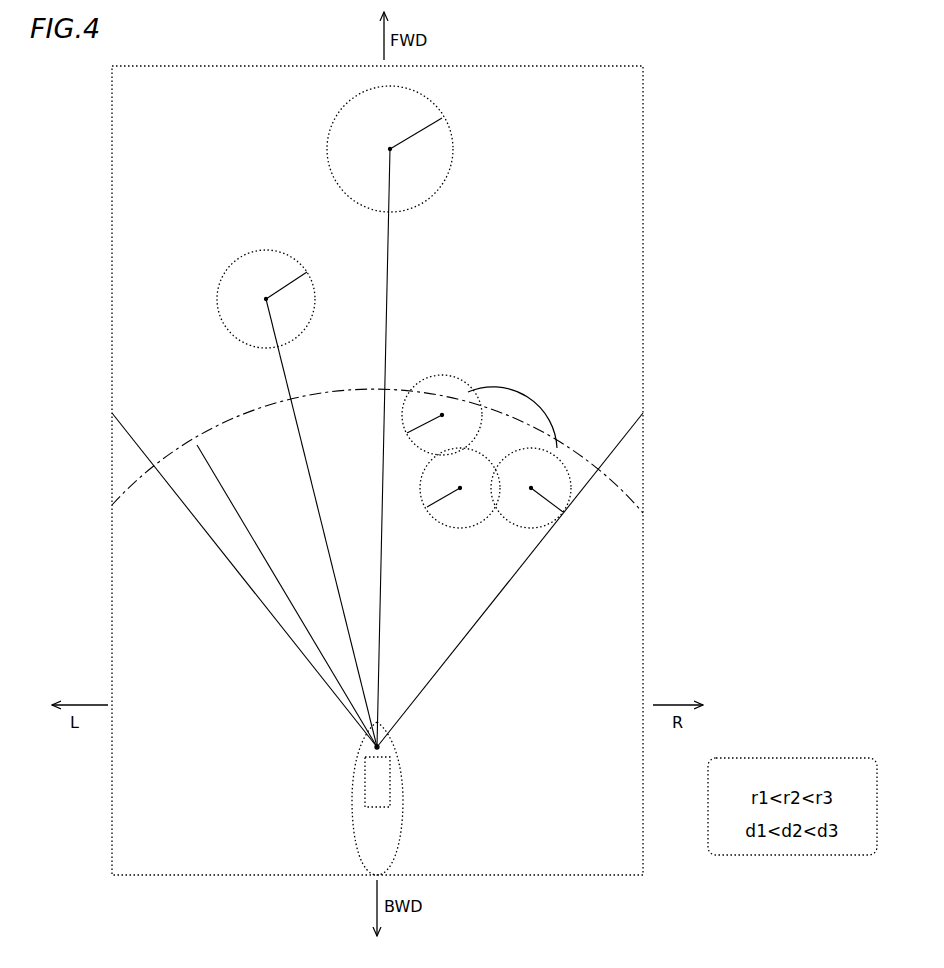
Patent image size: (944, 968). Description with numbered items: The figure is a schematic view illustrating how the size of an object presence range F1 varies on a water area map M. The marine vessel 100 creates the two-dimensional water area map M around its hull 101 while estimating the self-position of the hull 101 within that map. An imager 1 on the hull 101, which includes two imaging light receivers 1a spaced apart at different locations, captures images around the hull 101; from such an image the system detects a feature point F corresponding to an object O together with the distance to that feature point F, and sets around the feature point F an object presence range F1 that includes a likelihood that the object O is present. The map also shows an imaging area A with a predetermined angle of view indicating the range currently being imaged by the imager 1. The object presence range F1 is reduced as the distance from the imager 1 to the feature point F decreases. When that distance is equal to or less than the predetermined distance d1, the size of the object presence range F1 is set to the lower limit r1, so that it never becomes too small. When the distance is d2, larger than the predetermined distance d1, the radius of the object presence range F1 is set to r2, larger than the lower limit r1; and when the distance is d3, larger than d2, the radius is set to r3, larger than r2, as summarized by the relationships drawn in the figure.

The water area map M is at (97, 96).
The imaging area A is at (138, 430).
The predetermined distance d1 is at (287, 596).
The distance d2 is at (321, 523).
The distance d3 is at (394, 448).
The lower limit r1 is at (486, 451).
The radius r2 is at (266, 299).
The radius r3 is at (390, 149).
The object O is at (525, 383).
The feature point F is at (387, 146).
The object presence range F1 is at (373, 168).
The hull 101 is at (325, 798).
The marine vessel 100 is at (361, 833).
The imaging light receiver 1a is at (339, 784).
The imager 1 is at (364, 790).